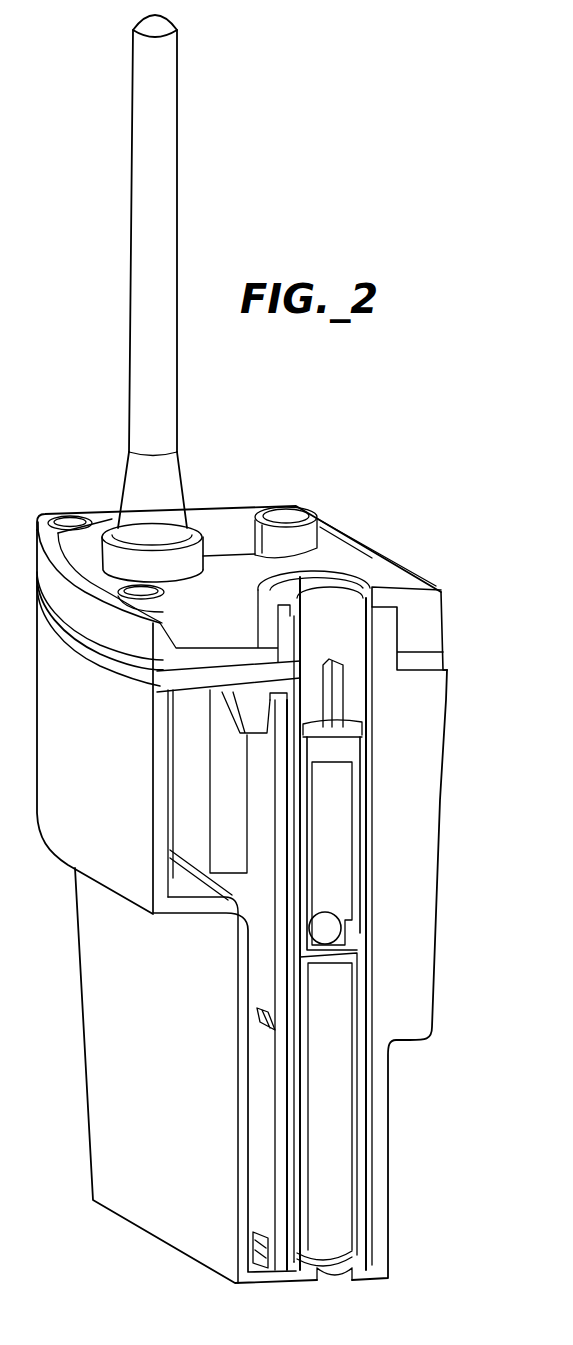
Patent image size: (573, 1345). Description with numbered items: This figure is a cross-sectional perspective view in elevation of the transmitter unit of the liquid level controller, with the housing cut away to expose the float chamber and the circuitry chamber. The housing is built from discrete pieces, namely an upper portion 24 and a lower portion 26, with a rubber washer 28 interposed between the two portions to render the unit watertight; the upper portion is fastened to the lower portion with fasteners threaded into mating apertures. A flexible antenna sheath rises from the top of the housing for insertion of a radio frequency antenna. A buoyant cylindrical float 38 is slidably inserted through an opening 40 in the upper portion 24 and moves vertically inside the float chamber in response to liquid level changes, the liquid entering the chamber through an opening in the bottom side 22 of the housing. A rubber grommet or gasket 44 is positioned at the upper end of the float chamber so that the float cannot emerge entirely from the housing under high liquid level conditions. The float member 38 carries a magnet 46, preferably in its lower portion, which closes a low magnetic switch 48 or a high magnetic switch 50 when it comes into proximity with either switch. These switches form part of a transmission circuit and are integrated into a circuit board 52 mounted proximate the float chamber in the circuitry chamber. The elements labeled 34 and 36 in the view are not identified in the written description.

The bottom side 22 is at (164, 116).
The upper portion 24 is at (432, 618).
The lower portion 26 is at (427, 826).
The rubber washer 28 is at (437, 665).
The panel 34 is at (190, 770).
The lower block 36 is at (345, 1013).
The buoyant cylindrical float 38 is at (347, 752).
The opening 40 is at (324, 600).
The rubber grommet or gasket 44 is at (332, 1289).
The magnet 46 is at (330, 925).
The low magnetic switch 48 is at (262, 1238).
The high magnetic switch 50 is at (260, 1018).
The circuit board 52 is at (258, 1108).